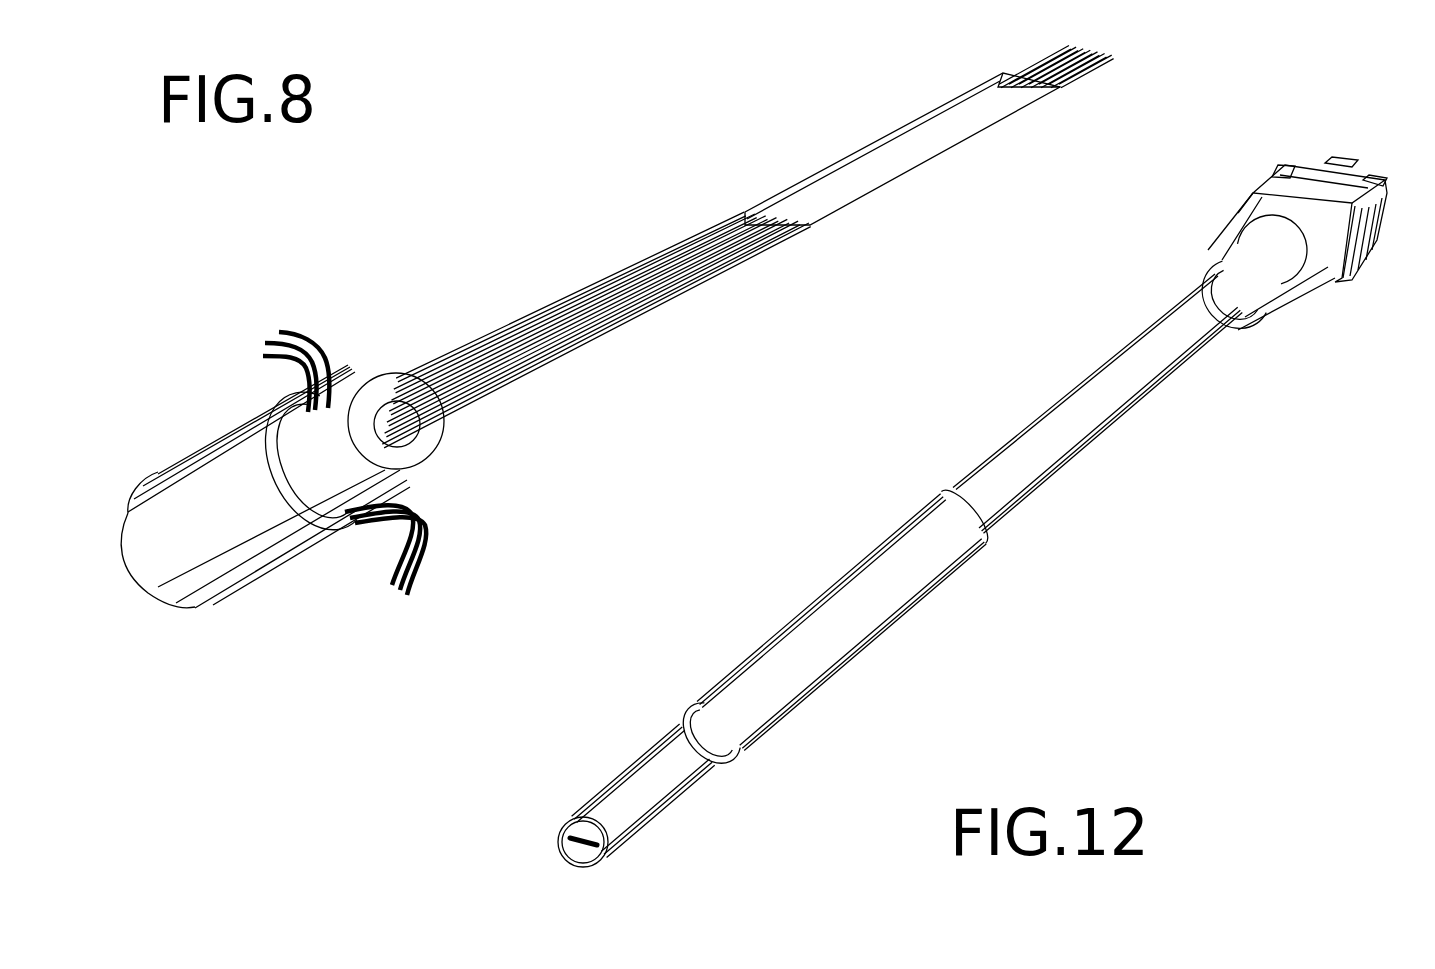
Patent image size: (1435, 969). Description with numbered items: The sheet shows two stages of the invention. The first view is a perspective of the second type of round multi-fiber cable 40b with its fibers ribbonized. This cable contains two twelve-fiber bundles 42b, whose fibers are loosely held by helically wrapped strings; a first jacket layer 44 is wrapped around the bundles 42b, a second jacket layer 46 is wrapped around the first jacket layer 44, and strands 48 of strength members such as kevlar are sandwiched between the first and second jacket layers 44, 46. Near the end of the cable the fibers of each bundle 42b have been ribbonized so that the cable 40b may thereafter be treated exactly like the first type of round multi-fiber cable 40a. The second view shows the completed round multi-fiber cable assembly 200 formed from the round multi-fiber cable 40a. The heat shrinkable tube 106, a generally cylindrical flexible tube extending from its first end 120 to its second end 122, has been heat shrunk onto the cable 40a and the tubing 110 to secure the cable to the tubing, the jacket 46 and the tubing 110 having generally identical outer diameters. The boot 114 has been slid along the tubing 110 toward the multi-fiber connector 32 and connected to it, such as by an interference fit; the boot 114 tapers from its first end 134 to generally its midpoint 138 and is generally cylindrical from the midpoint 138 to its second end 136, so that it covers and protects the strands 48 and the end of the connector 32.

In FIG. 12, the multi-fiber connector 32 is at (1322, 150).
In FIG. 12, the round multi-fiber cable 40a is at (710, 792).
In FIG. 8, the round multi-fiber cable 40b is at (622, 195).
In FIG. 8, the 12-fiber bundles 42b is at (556, 290).
In FIG. 8, the first jacket layer 44 is at (333, 430).
In FIG. 8, the second jacket layer 46 is at (228, 490).
In FIG. 12, the second jacket layer 46 is at (620, 812).
In FIG. 8, the strands of strength members 48 is at (317, 343).
In FIG. 12, the heat shrinkable tube 106 is at (820, 640).
In FIG. 12, the tubing 110 is at (1167, 355).
In FIG. 12, the boot 114 is at (1282, 275).
In FIG. 12, the first end 120 is at (687, 715).
In FIG. 12, the second end 122 is at (953, 491).
In FIG. 12, the first end 134 is at (1208, 263).
In FIG. 12, the second end 136 is at (1300, 205).
In FIG. 12, the midpoint 138 is at (1243, 217).
In FIG. 12, the round multi-fiber cable assembly 200 is at (1050, 335).